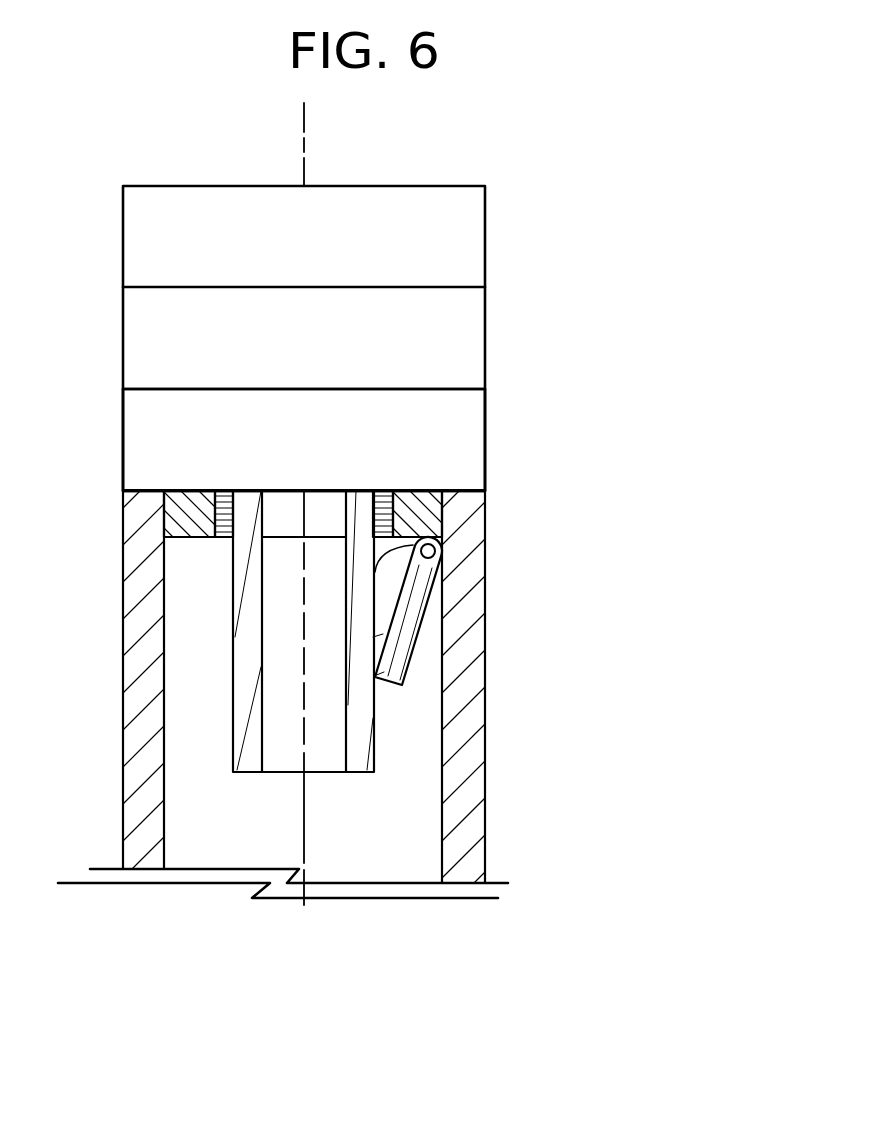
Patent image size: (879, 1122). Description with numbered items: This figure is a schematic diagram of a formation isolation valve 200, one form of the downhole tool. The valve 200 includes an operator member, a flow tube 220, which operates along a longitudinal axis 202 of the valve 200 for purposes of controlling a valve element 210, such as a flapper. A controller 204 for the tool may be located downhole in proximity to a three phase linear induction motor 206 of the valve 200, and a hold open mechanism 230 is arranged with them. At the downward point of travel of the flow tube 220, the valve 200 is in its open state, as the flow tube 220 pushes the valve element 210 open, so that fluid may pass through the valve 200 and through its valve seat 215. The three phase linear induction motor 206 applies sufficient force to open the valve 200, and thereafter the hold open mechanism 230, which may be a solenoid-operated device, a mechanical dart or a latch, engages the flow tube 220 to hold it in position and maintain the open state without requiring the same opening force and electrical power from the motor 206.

The formation isolation valve 200 is at (392, 504).
The longitudinal axis 202 is at (306, 152).
The controller 204 is at (450, 252).
The three phase linear induction motor 206 is at (450, 345).
The hold open mechanism 230 is at (450, 465).
The valve element 210 is at (405, 628).
The valve seat 215 is at (292, 537).
The flow tube 220 is at (362, 737).